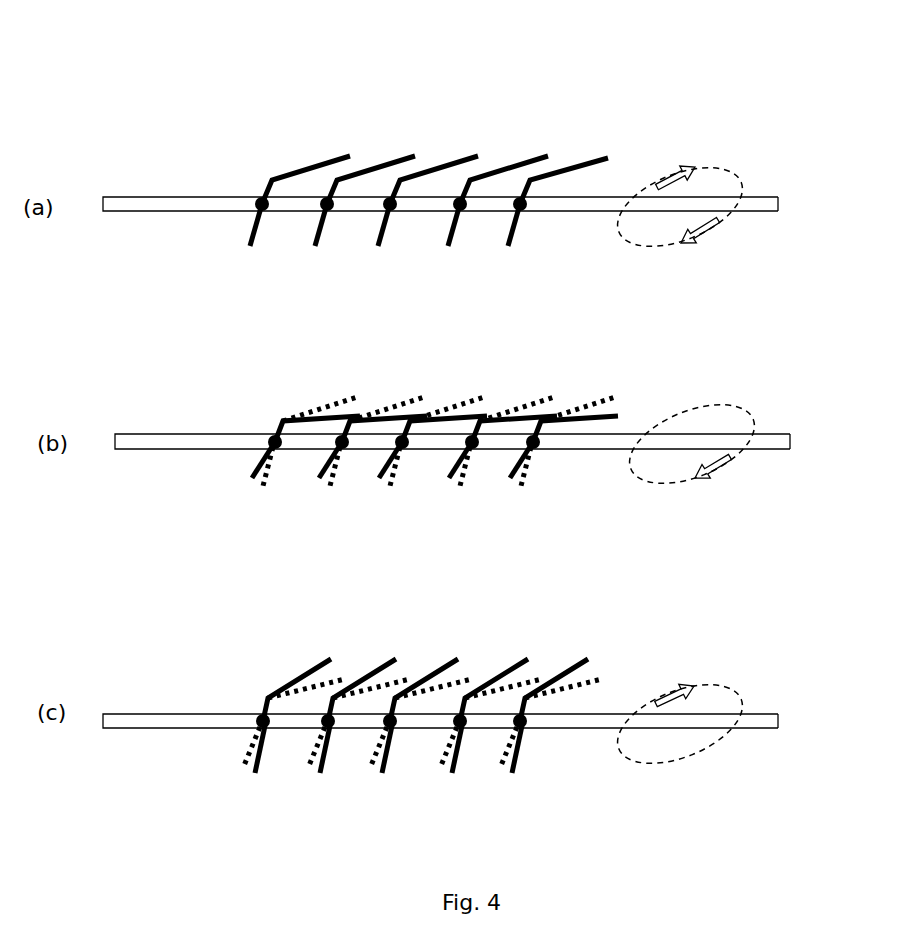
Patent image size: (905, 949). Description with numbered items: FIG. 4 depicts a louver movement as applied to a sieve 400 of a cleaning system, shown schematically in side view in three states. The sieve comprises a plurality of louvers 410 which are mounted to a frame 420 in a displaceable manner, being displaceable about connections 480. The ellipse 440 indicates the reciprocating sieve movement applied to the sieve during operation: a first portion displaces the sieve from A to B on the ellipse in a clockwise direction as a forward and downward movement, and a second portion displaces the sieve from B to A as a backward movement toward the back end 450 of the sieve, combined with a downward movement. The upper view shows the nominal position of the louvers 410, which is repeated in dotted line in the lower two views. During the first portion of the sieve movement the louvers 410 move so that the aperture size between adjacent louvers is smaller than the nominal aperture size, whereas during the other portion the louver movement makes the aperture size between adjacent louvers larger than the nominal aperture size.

The adaptive deformable structure 400 is at (146, 80).
The louvers 410 is at (317, 166).
The frame 420 is at (128, 212).
The ellipse 440 is at (657, 246).
The back end 450 is at (775, 203).
The connections 480 is at (263, 197).